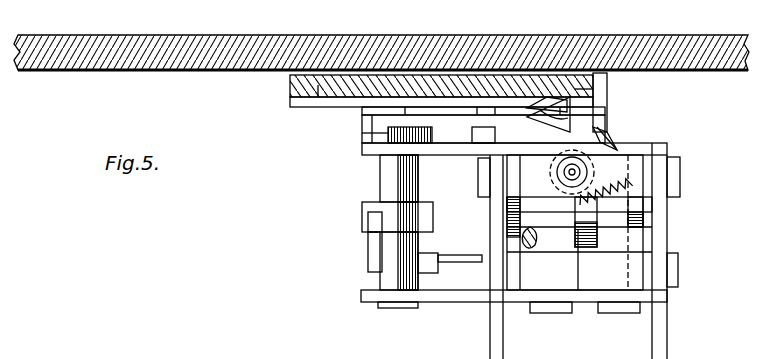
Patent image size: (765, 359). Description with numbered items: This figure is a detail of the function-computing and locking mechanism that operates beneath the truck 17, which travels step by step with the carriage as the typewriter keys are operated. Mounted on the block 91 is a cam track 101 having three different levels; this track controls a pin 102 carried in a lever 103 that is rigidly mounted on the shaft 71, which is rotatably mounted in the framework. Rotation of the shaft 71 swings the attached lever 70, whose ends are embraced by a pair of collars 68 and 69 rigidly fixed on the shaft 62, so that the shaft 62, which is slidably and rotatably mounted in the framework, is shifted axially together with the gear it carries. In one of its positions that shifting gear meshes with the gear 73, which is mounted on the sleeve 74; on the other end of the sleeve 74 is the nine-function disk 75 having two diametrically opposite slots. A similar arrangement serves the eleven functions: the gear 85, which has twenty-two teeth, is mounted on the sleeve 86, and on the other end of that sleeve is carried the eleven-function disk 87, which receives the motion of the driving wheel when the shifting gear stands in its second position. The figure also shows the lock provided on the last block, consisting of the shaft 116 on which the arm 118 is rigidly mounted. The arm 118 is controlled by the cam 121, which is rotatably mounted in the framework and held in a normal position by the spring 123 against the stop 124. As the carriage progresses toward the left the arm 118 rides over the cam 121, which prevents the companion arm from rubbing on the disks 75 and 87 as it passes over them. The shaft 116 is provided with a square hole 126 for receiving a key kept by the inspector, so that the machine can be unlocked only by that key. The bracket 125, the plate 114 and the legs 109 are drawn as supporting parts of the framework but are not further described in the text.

The truck 17 is at (195, 45).
The cam track 101 is at (300, 99).
The block 91 is at (318, 87).
The lever 103 is at (449, 115).
The pin 102 is at (551, 100).
The shaft 116 is at (530, 85).
The square hole 126 is at (594, 89).
The bracket 125 is at (602, 105).
The cam 121 is at (604, 137).
The arm 118 is at (610, 121).
The plate 114 is at (378, 118).
The legs 109 is at (503, 330).
The shaft 71 is at (388, 177).
The lever 70 is at (362, 213).
The collar 69 is at (372, 265).
The collar 68 is at (430, 265).
The shaft 62 is at (467, 234).
The stop 124 is at (700, 157).
The spring 123 is at (645, 210).
The gear 73 is at (644, 220).
The sleeve 74 is at (634, 227).
The 9 function disk 75 is at (588, 248).
The sleeve 86 is at (548, 213).
The gear 85 is at (520, 240).
The 11 function disk 87 is at (577, 232).